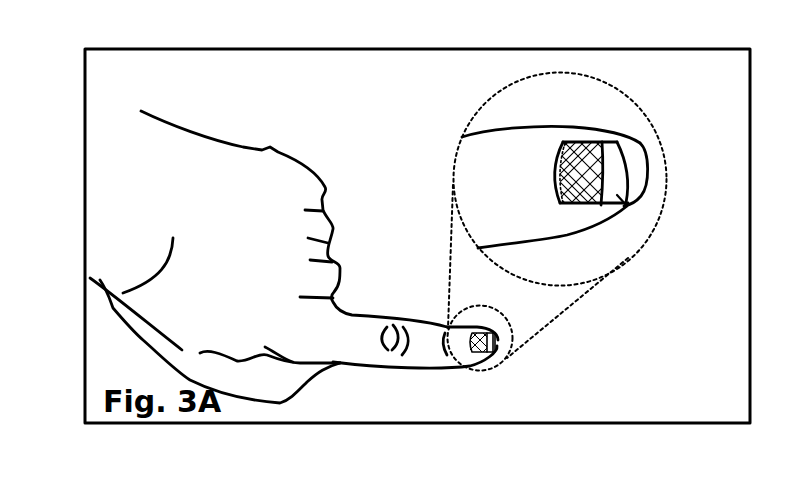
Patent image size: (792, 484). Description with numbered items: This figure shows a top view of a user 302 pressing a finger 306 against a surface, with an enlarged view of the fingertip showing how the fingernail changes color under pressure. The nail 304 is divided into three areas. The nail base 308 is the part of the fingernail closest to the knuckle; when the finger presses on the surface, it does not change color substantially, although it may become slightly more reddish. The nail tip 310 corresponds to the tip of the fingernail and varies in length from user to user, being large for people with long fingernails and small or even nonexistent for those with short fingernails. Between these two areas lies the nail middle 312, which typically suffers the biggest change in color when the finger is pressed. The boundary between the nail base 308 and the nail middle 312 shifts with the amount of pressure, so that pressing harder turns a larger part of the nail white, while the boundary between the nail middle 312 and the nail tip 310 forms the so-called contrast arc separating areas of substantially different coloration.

The user 302 is at (232, 163).
The nail 304 is at (640, 135).
The finger 306 is at (468, 162).
The nail base 308 is at (588, 191).
The nail tip 310 is at (645, 168).
The nail middle 312 is at (627, 206).